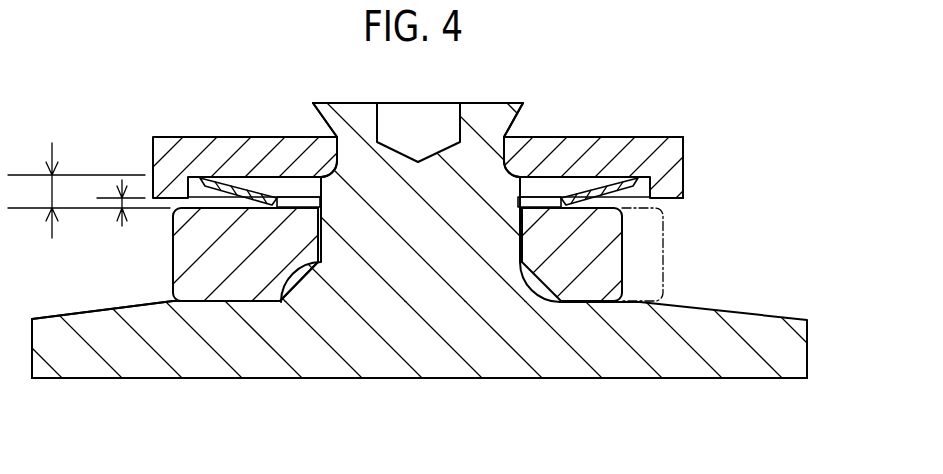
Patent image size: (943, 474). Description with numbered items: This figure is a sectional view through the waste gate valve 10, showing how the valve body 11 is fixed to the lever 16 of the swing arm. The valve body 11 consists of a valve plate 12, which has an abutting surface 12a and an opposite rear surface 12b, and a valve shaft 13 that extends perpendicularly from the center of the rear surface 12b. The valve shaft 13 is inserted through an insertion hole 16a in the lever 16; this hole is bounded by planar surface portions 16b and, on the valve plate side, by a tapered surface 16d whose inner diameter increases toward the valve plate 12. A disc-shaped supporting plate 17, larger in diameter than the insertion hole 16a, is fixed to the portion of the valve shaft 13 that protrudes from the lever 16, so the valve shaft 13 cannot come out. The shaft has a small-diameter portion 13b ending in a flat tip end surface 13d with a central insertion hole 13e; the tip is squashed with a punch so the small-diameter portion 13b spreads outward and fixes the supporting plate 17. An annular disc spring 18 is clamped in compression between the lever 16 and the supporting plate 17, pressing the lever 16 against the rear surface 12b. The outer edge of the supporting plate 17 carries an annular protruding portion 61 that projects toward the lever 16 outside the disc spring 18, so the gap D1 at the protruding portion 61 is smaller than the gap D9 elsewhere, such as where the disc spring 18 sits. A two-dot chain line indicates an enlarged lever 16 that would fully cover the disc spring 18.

The waste gate valve 10 is at (705, 112).
The valve body 11 is at (791, 225).
The valve plate 12 is at (763, 340).
The abutting surface 12a is at (135, 379).
The rear surface 12b is at (78, 316).
The valve shaft 13 is at (497, 234).
The small-diameter portion 13b is at (517, 115).
The tip end surface 13d is at (342, 102).
The insertion hole 13e is at (452, 102).
The lever 16 is at (173, 265).
The insertion hole 16a is at (518, 256).
The planar surface portions 16b is at (322, 252).
The tapered surface 16d is at (300, 297).
The supporting plate 17 is at (569, 136).
The disc spring 18 is at (246, 176).
The protruding portion 61 is at (685, 182).
The gap D9 is at (89, 174).
The gap D1 is at (121, 221).